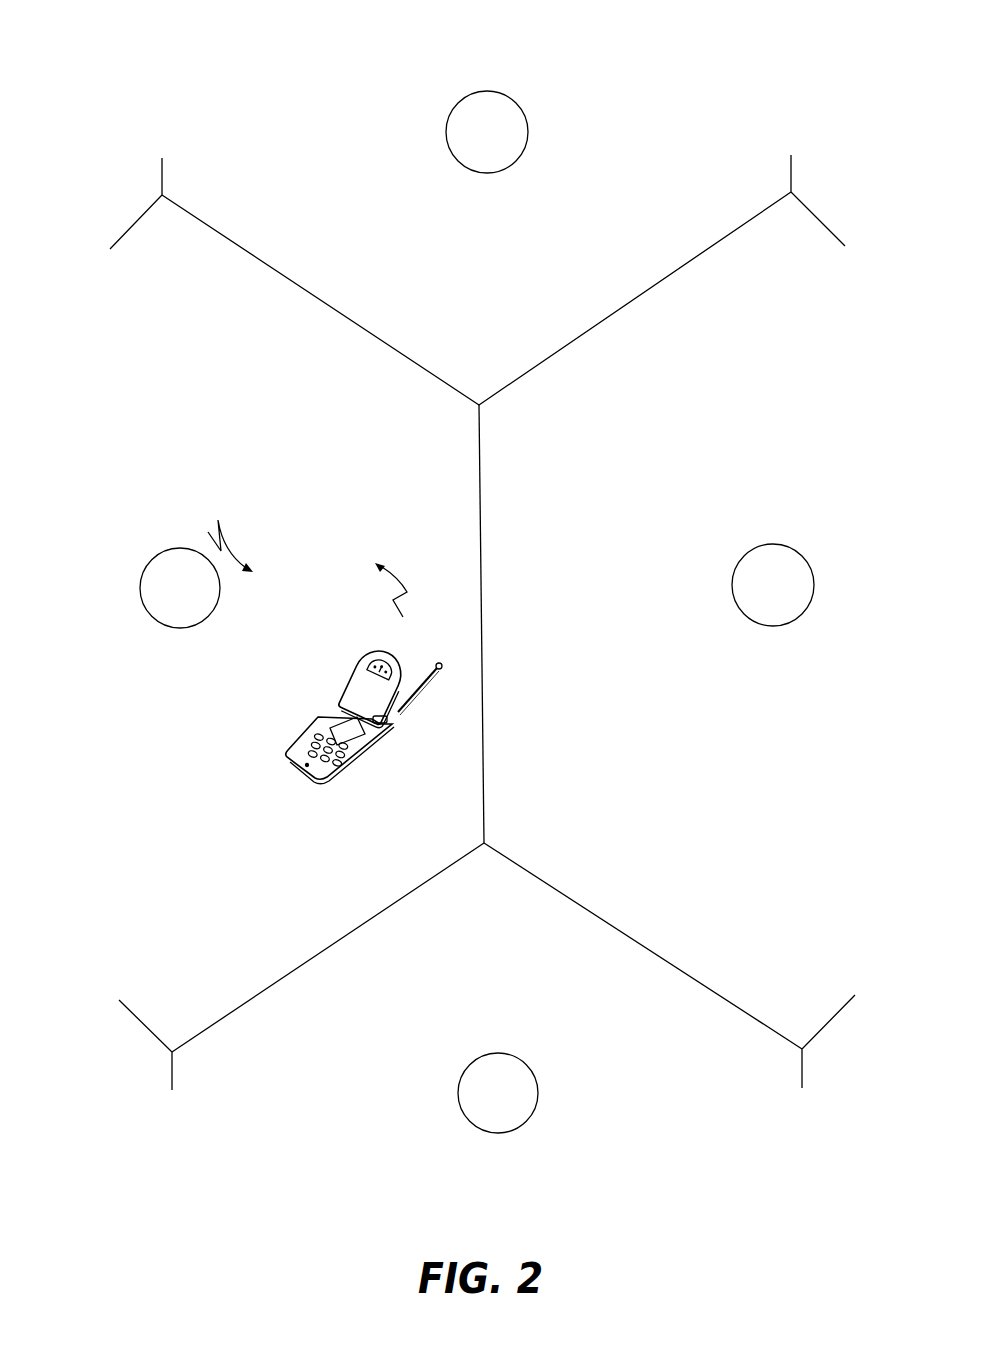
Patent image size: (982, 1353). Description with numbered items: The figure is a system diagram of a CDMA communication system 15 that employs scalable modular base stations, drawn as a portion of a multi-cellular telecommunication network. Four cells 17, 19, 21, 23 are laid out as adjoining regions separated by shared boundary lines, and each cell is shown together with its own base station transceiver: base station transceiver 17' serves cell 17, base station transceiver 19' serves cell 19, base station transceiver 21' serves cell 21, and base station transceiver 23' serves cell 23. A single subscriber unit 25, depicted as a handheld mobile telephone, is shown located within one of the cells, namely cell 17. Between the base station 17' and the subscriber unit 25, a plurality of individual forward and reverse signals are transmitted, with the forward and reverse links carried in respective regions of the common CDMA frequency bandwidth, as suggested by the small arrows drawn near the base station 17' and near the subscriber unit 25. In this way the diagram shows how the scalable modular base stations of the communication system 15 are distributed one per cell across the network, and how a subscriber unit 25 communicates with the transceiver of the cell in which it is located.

The CDMA communication system 15 is at (98, 129).
The cell 17 is at (346, 669).
The base station transceiver 17' is at (195, 549).
The cell 19 is at (476, 298).
The base station transceiver 19' is at (487, 108).
The cell 21 is at (643, 946).
The base station transceiver 21' is at (773, 557).
The cell 23 is at (328, 947).
The base station transceiver 23' is at (498, 1060).
The subscriber unit 25 is at (350, 677).